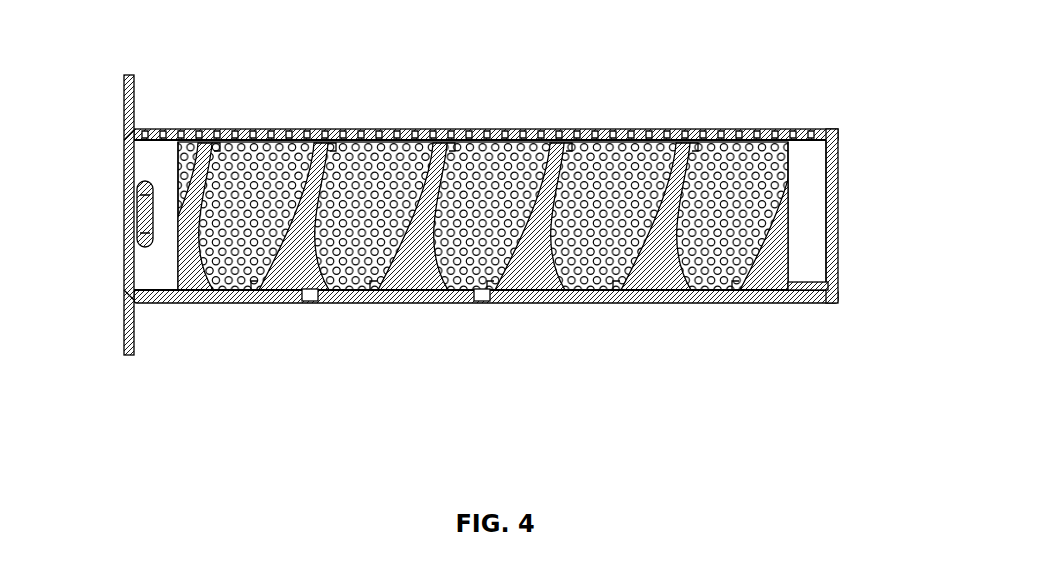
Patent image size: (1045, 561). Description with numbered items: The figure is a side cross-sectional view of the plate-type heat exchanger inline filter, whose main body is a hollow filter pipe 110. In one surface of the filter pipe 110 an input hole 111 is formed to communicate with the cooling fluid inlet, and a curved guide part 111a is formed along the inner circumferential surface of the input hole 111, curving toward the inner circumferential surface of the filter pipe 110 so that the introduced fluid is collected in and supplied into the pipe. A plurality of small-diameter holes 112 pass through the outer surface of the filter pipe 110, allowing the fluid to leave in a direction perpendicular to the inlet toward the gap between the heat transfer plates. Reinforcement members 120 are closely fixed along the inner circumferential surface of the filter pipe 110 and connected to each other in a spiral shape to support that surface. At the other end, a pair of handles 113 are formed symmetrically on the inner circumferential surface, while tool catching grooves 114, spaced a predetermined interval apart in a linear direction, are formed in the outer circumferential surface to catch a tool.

The filter pipe 110 is at (232, 304).
The input hole 111 is at (820, 215).
The curved guide part 111a is at (840, 280).
The small-diameter holes 112 is at (467, 128).
The handles 113 is at (138, 222).
The tool catching grooves 114 is at (308, 303).
The reinforcement members 120 is at (623, 285).